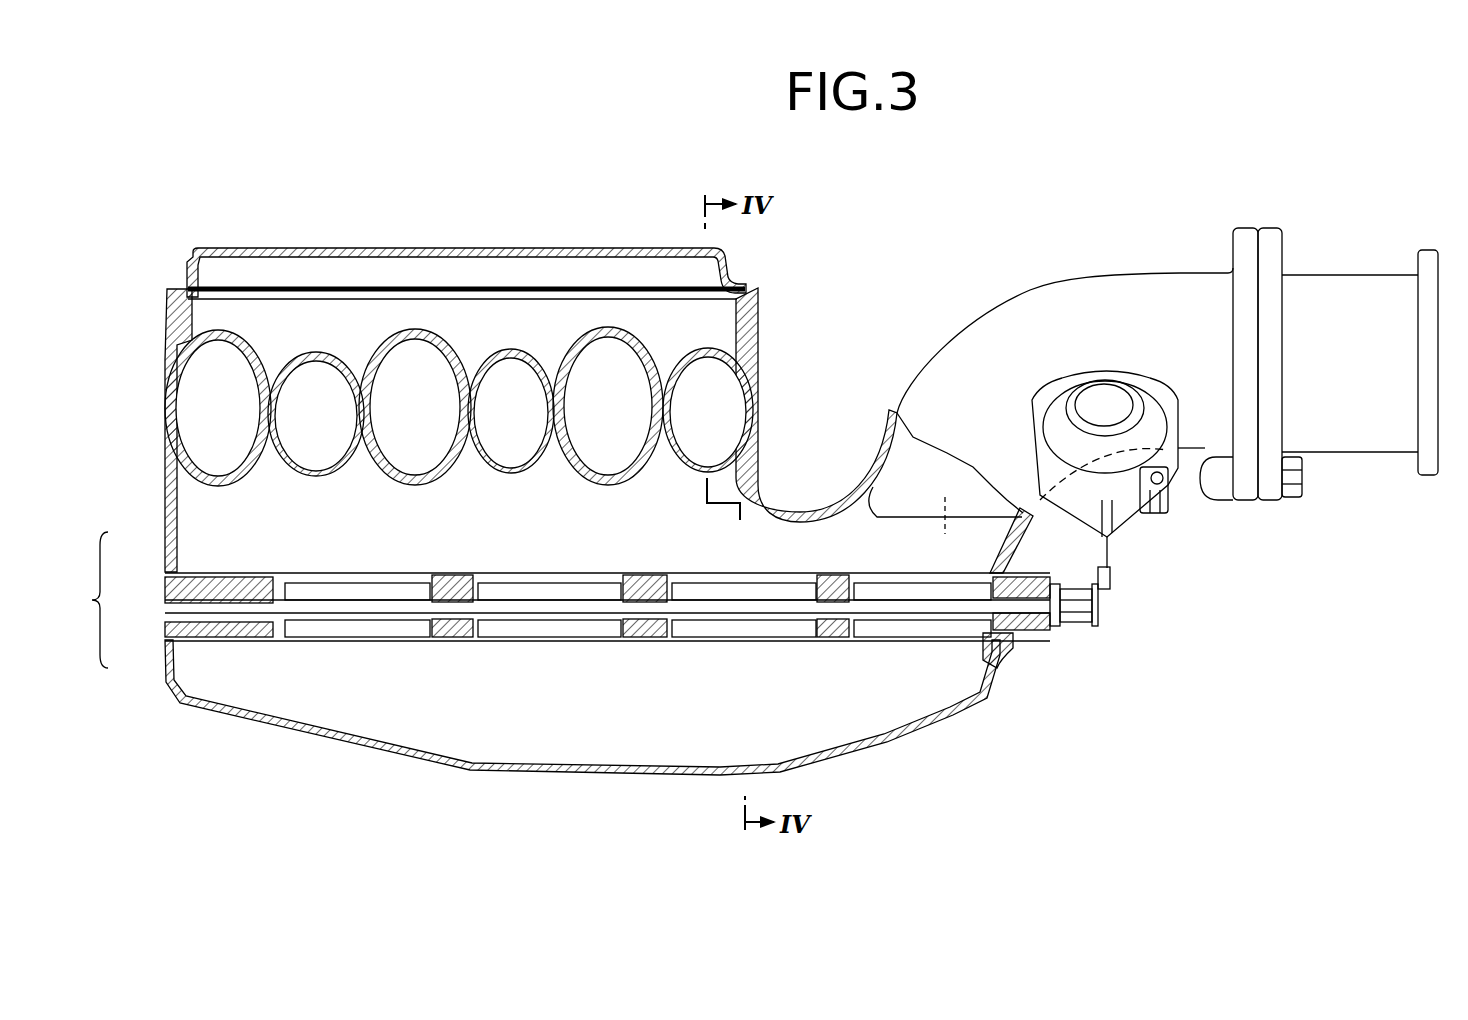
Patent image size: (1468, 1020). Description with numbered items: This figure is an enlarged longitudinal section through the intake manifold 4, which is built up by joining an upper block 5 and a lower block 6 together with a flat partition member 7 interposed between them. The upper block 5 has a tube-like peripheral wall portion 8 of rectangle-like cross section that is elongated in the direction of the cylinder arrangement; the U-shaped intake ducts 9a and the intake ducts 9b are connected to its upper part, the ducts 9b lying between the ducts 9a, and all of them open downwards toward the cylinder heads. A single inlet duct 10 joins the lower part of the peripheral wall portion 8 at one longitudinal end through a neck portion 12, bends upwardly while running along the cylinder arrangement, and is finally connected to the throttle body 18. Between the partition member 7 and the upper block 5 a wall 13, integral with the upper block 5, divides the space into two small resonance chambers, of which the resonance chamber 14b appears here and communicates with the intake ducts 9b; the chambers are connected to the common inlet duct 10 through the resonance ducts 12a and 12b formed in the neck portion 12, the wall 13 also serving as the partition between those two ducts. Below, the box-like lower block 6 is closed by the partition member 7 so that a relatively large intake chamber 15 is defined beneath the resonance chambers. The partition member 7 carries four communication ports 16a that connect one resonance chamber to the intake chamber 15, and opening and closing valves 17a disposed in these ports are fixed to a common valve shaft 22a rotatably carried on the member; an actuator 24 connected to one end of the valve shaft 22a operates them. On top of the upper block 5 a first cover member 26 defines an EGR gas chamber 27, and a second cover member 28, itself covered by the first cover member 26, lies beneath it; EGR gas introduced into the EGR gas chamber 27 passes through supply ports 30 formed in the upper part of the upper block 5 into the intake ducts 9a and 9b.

The intake manifold 4 is at (90, 600).
The upper block 5 is at (163, 540).
The lower block 6 is at (172, 668).
The partition member 7 is at (165, 590).
The peripheral wall portion 8 is at (760, 466).
The intake ducts 9a is at (254, 470).
The intake ducts 9b is at (337, 380).
The inlet duct 10 is at (1082, 289).
The neck portion 12 is at (800, 517).
The resonance duct 12a is at (902, 530).
The resonance duct 12b is at (948, 505).
The wall 13 is at (856, 503).
The resonance chamber 14b is at (508, 511).
The intake chamber 15 is at (634, 741).
The communication ports 16a is at (437, 641).
The opening and closing valves 17a is at (349, 641).
The throttle body 18 is at (1338, 278).
The valve shaft 22a is at (1110, 604).
The actuator 24 is at (1136, 514).
The first cover member 26 is at (484, 252).
The EGR gas chamber 27 is at (425, 266).
The second cover member 28 is at (331, 285).
The supply ports 30 is at (314, 355).